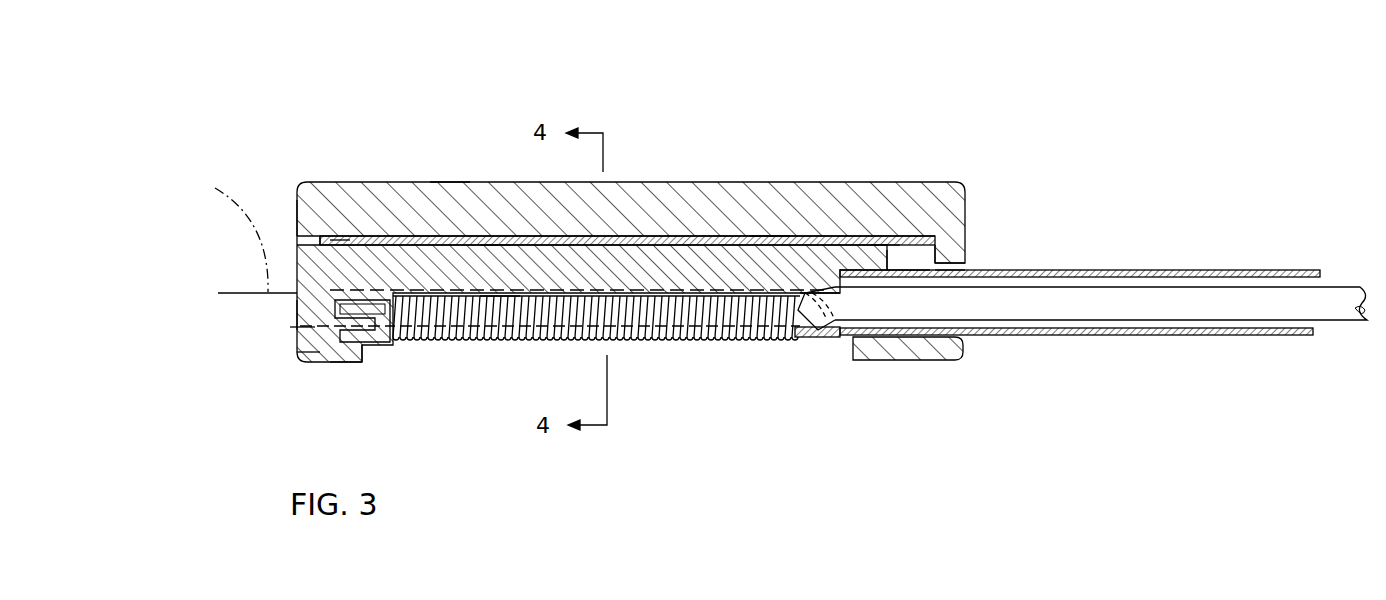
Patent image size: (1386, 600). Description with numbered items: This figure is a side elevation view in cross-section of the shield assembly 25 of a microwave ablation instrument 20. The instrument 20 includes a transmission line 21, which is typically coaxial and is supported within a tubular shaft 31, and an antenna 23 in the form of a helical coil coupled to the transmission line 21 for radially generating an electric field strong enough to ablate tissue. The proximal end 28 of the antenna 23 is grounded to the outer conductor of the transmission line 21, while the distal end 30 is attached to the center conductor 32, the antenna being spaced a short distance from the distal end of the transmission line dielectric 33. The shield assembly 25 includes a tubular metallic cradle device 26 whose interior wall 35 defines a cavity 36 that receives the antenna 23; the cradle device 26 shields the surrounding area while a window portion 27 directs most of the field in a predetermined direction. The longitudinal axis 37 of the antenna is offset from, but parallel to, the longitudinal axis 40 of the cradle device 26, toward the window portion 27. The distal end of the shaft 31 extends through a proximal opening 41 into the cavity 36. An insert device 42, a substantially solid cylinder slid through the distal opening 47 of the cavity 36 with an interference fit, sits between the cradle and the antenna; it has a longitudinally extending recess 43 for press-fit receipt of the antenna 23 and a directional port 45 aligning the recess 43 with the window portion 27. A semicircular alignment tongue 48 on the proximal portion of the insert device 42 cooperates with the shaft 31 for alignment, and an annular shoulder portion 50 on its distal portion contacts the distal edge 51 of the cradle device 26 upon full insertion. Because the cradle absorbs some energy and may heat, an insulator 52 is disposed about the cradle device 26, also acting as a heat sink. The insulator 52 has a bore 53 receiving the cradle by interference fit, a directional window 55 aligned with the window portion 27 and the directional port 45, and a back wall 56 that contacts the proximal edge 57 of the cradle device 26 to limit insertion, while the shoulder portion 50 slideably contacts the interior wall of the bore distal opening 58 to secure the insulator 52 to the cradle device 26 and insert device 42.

The microwave ablation instrument 20 is at (1090, 102).
The transmission line 21 is at (1228, 285).
The antenna 23 is at (687, 344).
The shield assembly 25 is at (722, 176).
The cradle device 26 is at (768, 236).
The window portion 27 is at (848, 358).
The proximal end 28 is at (780, 340).
The distal end 30 is at (387, 344).
The tubular shaft 31 is at (1240, 336).
The center conductor 32 is at (297, 312).
The transmission line dielectric 33 is at (343, 348).
The interior wall 35 is at (385, 248).
The cavity 36 is at (932, 242).
The longitudinal axis 37 is at (506, 342).
The longitudinal axis 40 is at (236, 233).
The proximal opening 41 is at (958, 256).
The insert device 42 is at (659, 246).
The recess 43 is at (300, 328).
The directional port 45 is at (822, 342).
The distal opening 47 is at (297, 238).
The alignment tongue 48 is at (884, 250).
The annular shoulder portion 50 is at (348, 242).
The distal edge 51 is at (312, 232).
The insulator 52 is at (446, 182).
The bore 53 is at (495, 250).
The directional window 55 is at (362, 346).
The back wall 56 is at (955, 266).
The proximal edge 57 is at (942, 250).
The distal opening 58 is at (297, 344).